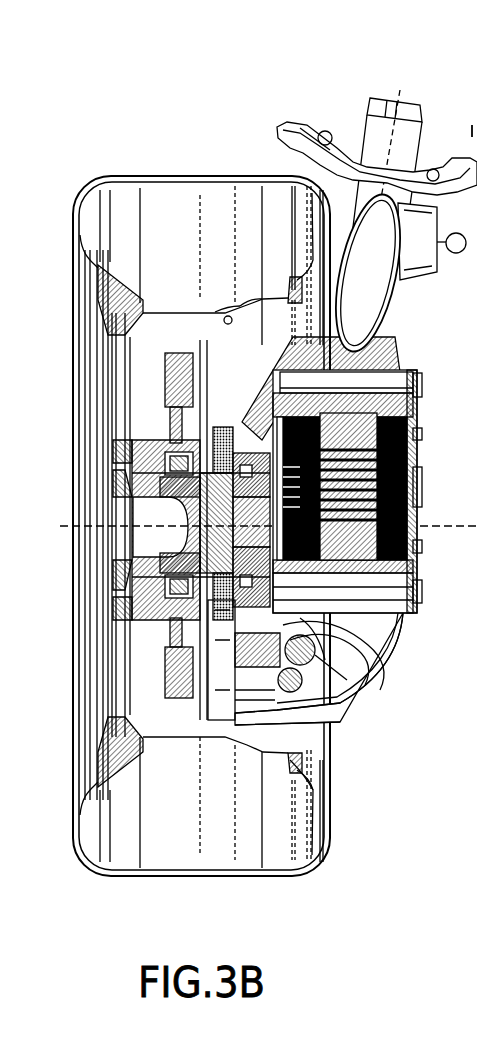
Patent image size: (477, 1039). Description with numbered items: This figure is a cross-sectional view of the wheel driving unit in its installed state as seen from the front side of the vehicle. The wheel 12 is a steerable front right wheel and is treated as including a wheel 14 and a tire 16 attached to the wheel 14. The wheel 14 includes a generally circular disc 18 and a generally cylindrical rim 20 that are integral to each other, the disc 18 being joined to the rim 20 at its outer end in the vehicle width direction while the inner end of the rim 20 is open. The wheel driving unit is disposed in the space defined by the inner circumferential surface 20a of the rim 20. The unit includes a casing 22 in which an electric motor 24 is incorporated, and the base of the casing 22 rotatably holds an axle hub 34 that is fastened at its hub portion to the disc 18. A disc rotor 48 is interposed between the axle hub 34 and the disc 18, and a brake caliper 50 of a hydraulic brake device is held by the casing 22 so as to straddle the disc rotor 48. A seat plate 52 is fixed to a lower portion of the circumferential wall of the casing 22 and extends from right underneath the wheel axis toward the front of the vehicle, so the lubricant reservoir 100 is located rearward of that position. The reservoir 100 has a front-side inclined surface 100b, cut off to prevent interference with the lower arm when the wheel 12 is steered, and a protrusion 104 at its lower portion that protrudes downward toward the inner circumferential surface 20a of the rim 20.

The wheel 12 is at (73, 128).
The wheel 14 is at (182, 285).
The tire 16 is at (88, 185).
The disc 18 is at (115, 370).
The rim 20 is at (210, 300).
The inner circumferential surface 20a is at (240, 303).
The casing 22 is at (395, 362).
The electric motor 24 is at (425, 570).
The axle hub 34 is at (110, 544).
The disc rotor 48 is at (157, 680).
The brake caliper 50 is at (476, 387).
The seat plate 52 is at (347, 680).
The lubricant reservoir 100 is at (372, 699).
The front-side inclined surface 100b is at (358, 650).
The protrusion 104 is at (328, 763).